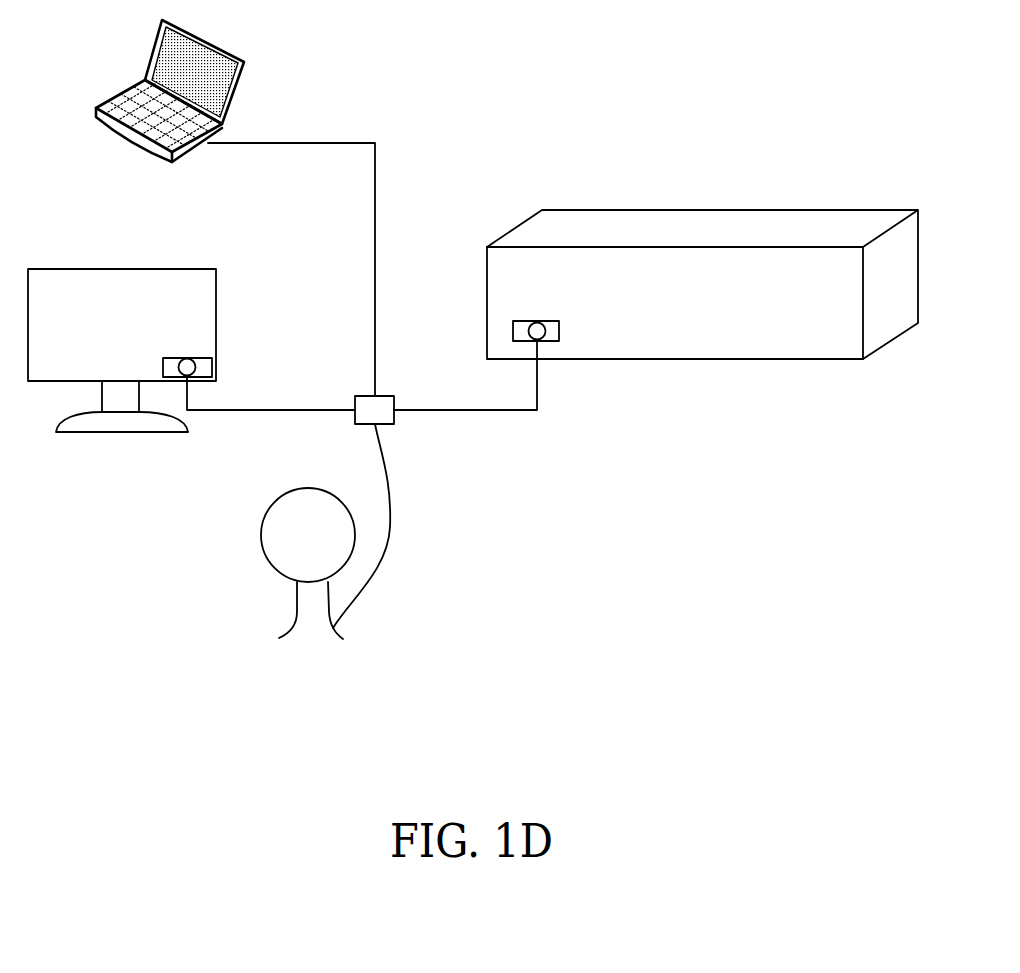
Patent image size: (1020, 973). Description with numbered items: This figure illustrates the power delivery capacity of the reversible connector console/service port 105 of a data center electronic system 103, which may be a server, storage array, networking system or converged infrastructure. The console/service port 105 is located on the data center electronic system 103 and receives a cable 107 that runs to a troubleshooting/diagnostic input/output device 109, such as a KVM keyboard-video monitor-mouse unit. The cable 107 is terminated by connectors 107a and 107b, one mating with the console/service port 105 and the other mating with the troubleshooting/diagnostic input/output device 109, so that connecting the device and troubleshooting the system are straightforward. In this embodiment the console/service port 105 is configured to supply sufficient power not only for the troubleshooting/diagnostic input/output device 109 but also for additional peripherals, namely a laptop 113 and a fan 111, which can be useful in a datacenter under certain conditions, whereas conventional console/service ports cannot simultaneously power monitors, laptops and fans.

The data center electronic system 103 is at (843, 222).
The console/service port 105 is at (537, 322).
The cable 107 is at (487, 410).
The connector 107a is at (560, 330).
The connector 107b is at (187, 360).
The troubleshooting/diagnostic input/output device 109 is at (46, 269).
The fan 111 is at (277, 518).
The laptop 113 is at (153, 63).